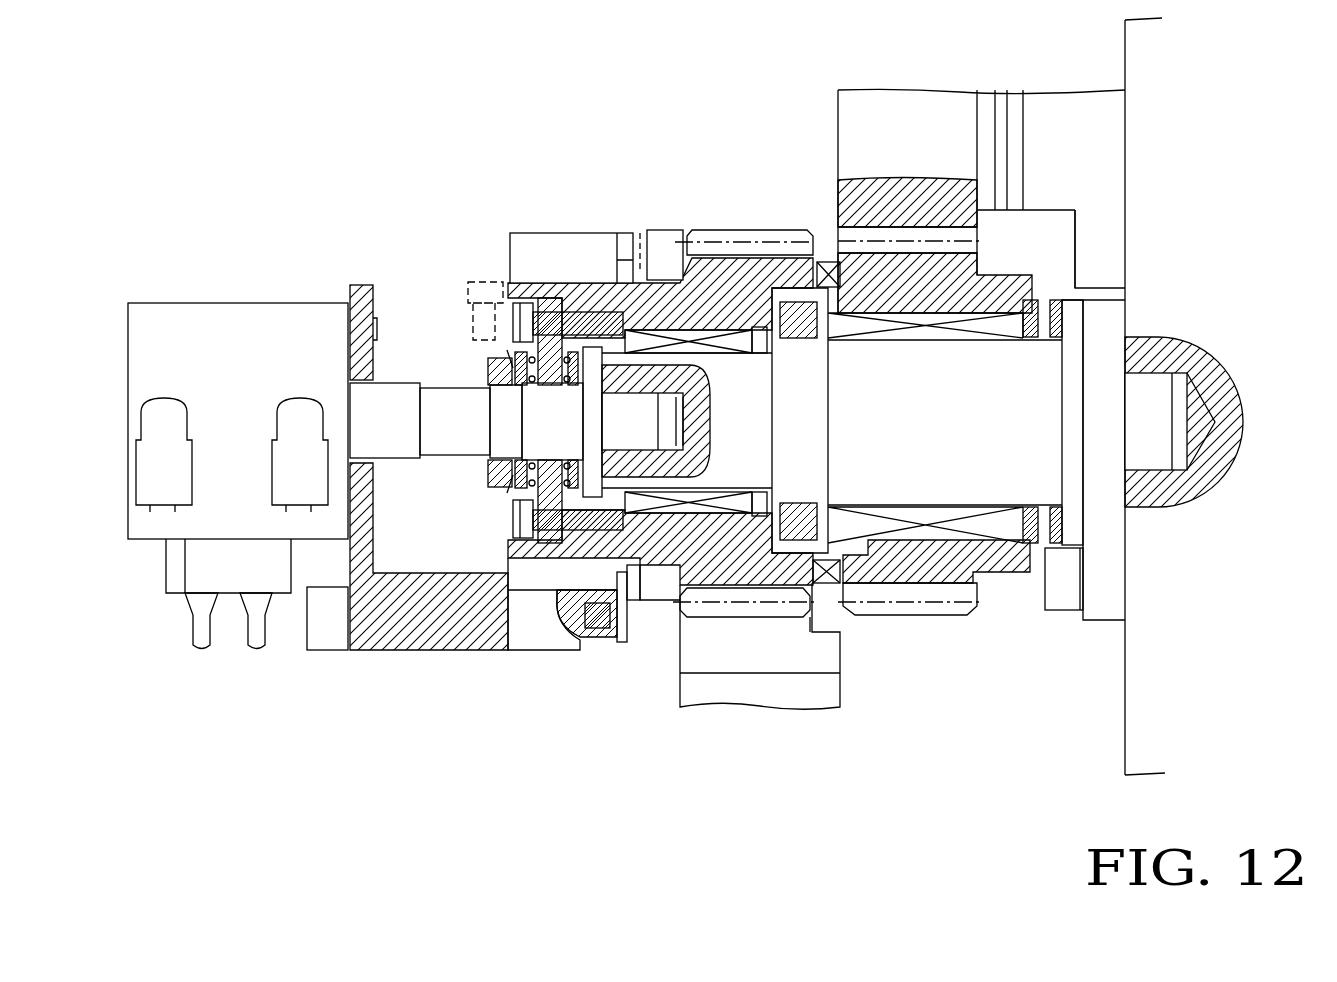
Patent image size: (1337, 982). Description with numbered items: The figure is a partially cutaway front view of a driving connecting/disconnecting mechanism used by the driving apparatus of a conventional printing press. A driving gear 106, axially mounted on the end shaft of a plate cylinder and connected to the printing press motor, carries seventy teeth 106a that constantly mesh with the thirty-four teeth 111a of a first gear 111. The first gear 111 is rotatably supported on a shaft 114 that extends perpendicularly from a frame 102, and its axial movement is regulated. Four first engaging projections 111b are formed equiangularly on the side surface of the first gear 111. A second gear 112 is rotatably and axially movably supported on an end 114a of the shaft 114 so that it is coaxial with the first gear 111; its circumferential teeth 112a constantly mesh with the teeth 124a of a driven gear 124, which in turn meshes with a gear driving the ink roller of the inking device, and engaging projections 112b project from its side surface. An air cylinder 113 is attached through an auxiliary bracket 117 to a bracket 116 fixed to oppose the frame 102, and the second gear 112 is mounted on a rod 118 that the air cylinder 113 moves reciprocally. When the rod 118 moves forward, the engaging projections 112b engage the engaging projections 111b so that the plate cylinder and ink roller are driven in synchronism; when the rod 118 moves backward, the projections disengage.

The frame 102 is at (1125, 52).
The driving gear 106 is at (845, 113).
The teeth of the driving gear 106a is at (830, 258).
The first gear 111 is at (1000, 576).
The teeth of the first gear 111a is at (943, 617).
The first engaging projections 111b is at (825, 587).
The second gear 112 is at (658, 273).
The teeth of the second gear 112a is at (728, 230).
The engaging projections of the second gear 112b is at (813, 257).
The air cylinder 113 is at (213, 302).
The shaft 114 is at (1040, 370).
The end of the shaft 114a is at (690, 355).
The bracket 116 is at (508, 660).
The auxiliary bracket 117 is at (365, 650).
The rod 118 is at (438, 383).
The driven gear 124 is at (680, 652).
The teeth of the driven gear 124a is at (700, 595).